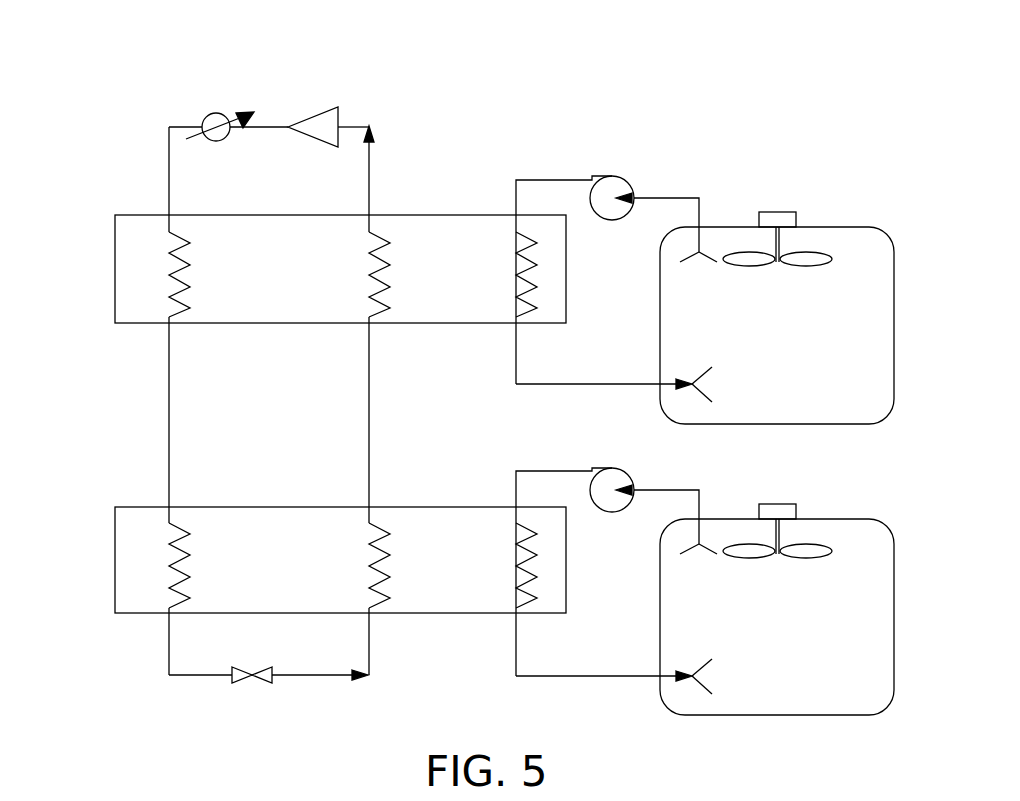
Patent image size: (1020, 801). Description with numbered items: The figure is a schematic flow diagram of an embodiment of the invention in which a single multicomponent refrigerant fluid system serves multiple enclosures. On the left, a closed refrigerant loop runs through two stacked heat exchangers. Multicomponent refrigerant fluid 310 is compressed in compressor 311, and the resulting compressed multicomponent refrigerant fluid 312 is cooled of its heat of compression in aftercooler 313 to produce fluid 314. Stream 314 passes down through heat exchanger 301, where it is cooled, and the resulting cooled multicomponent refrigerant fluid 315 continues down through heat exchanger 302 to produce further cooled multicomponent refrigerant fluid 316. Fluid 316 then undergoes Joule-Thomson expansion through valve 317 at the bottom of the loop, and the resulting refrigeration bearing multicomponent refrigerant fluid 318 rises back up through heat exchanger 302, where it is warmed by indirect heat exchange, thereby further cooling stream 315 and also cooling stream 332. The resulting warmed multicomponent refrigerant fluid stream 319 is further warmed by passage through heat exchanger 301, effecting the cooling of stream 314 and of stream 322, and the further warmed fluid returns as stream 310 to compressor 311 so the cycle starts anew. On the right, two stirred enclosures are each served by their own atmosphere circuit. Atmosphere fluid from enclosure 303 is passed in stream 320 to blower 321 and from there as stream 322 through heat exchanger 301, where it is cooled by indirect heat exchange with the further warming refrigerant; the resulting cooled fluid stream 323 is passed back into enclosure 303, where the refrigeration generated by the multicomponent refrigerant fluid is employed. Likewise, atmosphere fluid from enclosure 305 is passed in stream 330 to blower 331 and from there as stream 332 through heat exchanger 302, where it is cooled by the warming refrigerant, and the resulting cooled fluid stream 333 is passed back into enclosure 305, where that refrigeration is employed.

The heat exchanger 301 is at (249, 282).
The heat exchanger 302 is at (249, 574).
The enclosure 303 is at (762, 335).
The enclosure 305 is at (762, 627).
The multicomponent refrigerant fluid 310 is at (368, 110).
The compressor 311 is at (300, 100).
The compressed multicomponent refrigerant fluid 312 is at (263, 144).
The aftercooler 313 is at (210, 100).
The multicomponent refrigerant fluid stream 314 is at (150, 185).
The cooled multicomponent refrigerant fluid 315 is at (150, 443).
The further cooled multicomponent refrigerant fluid 316 is at (150, 655).
The valve 317 is at (256, 658).
The refrigeration bearing multicomponent refrigerant fluid 318 is at (391, 662).
The warmed multicomponent refrigerant fluid stream 319 is at (389, 430).
The stream 320 is at (663, 180).
The blower 321 is at (616, 154).
The stream 322 is at (500, 195).
The cooled fluid stream 323 is at (503, 365).
The stream 330 is at (689, 492).
The blower 331 is at (602, 461).
The stream 332 is at (500, 488).
The cooled fluid stream 333 is at (504, 632).